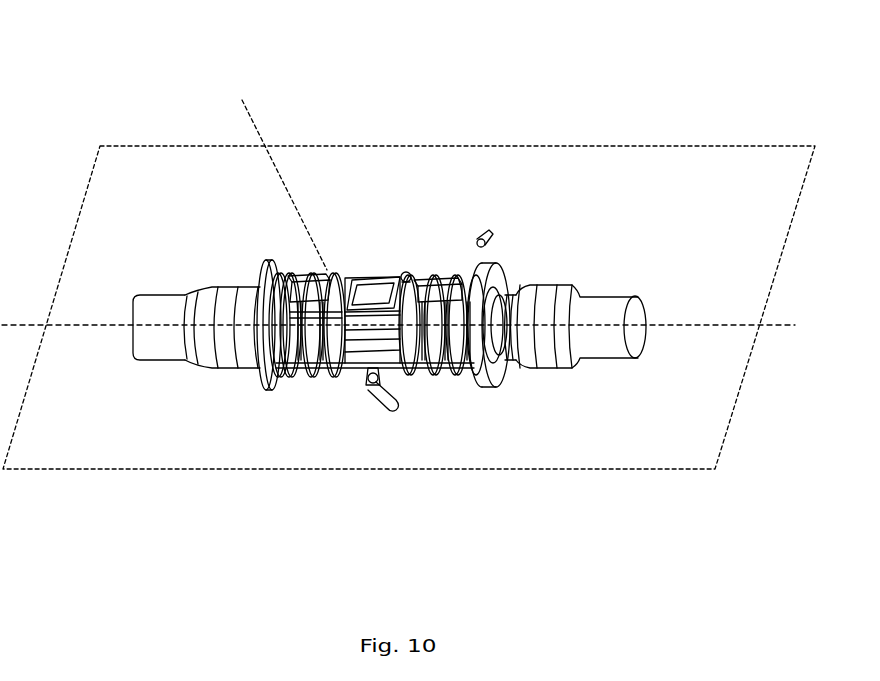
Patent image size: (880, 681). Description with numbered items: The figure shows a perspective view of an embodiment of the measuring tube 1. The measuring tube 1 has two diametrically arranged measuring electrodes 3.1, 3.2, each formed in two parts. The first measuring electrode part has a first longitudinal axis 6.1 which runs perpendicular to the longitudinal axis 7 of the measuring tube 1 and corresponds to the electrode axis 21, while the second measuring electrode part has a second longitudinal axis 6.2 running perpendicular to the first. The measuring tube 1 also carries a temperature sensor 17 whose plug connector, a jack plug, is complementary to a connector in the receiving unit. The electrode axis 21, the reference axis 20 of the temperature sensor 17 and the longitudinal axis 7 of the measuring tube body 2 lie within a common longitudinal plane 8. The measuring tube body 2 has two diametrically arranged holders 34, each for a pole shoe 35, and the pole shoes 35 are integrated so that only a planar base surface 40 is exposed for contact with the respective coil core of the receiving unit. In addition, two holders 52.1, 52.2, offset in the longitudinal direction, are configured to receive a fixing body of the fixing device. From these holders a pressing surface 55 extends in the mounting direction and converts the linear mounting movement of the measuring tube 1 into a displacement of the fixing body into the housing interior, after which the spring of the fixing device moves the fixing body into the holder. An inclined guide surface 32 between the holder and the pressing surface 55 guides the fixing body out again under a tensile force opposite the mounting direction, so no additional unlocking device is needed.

The measuring tube 1 is at (603, 262).
The measuring tube body 2 is at (530, 343).
The measuring electrode 3.1 is at (370, 380).
The measuring electrode 3.2 is at (404, 272).
The first longitudinal axis 6.1 is at (407, 272).
The second longitudinal axis 6.2 is at (392, 408).
The longitudinal axis 7 is at (410, 325).
The common longitudinal plane 8 is at (117, 187).
The temperature sensor 17 is at (471, 262).
The reference axis 20 is at (483, 238).
The electrode axis 21 is at (372, 388).
The guide surface 32 is at (290, 279).
The holder 34 is at (386, 280).
The pole shoe 35 is at (364, 279).
The base surface 40 is at (366, 292).
The holder 52.1 is at (312, 297).
The holder 52.2 is at (447, 279).
The pressing surface 55 is at (314, 275).